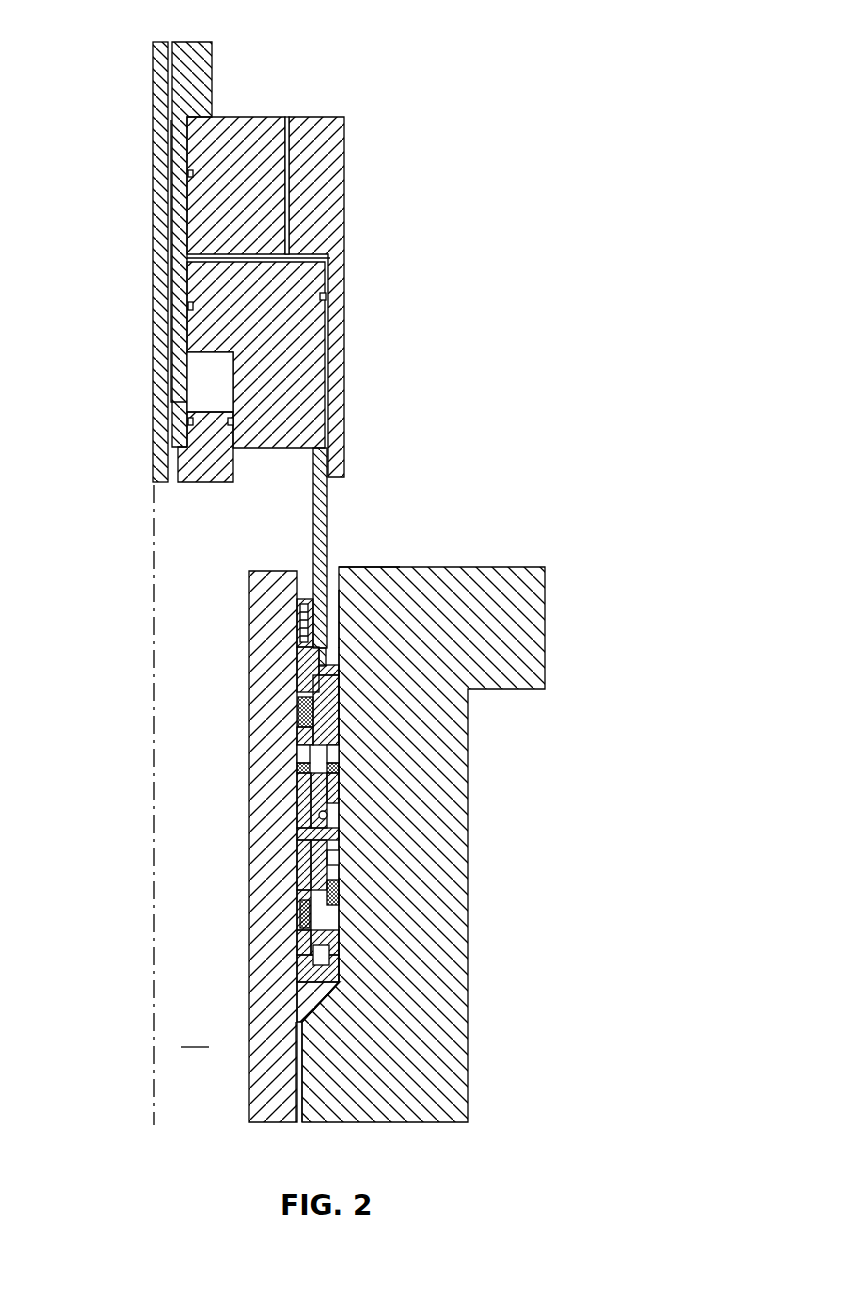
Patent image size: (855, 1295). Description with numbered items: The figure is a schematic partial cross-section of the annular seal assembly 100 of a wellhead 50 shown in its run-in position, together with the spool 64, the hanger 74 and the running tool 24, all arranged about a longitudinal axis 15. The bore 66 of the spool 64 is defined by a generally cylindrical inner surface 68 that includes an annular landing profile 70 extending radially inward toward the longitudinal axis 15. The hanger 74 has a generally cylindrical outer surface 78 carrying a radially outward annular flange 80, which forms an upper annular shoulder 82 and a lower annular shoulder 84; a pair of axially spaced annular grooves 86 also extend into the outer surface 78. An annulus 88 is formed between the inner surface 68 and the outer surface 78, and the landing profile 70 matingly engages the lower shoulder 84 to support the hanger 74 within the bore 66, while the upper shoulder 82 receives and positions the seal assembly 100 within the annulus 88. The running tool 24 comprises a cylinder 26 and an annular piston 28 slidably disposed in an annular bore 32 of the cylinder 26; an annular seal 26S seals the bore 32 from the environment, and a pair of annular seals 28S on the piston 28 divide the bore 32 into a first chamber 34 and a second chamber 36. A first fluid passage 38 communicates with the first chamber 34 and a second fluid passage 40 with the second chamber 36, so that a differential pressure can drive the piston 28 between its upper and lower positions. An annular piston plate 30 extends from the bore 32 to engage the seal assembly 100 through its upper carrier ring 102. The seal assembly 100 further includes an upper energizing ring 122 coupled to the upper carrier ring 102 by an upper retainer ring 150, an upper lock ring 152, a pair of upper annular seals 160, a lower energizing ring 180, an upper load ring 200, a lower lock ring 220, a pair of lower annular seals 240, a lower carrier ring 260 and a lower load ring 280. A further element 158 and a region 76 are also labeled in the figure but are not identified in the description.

The wellhead 50 is at (425, 81).
The running tool 24 is at (121, 168).
The second fluid passage 40 is at (172, 188).
The cylinder 26 is at (345, 158).
The first fluid passage 38 is at (287, 122).
The annular piston 28 is at (320, 355).
The first chamber 34 is at (330, 265).
The annular seals 28S is at (188, 306).
The annular bore 32 is at (205, 385).
The second chamber 36 is at (205, 420).
The annular seal 26S is at (235, 422).
The annular piston plate 30 is at (323, 490).
The longitudinal axis 15 is at (152, 540).
The hanger 74 is at (268, 1060).
The upper annular shoulder 82 is at (320, 990).
The spool 64 is at (468, 806).
The annulus 88 is at (345, 568).
The bore 66 is at (340, 606).
The inner surface 68 is at (340, 630).
The annular landing profile 70 is at (340, 1013).
The lower annular shoulder 84 is at (325, 1035).
The annular flange 80 is at (322, 997).
The annular seal assembly 100 is at (346, 689).
The outer surface 78 is at (300, 612).
The upper carrier ring 102 is at (300, 652).
The upper retainer ring 150 is at (342, 668).
The upper energizing ring 122 is at (345, 718).
The upper lock ring 152 is at (300, 706).
The recess 158 is at (300, 748).
The upper annular seals 160 is at (345, 772).
The annular grooves 86 is at (298, 785).
The upper load ring 200 is at (305, 832).
The lower energizing ring 180 is at (330, 815).
The lower lock ring 220 is at (300, 852).
The lower annular seals 240 is at (335, 900).
The lower load ring 280 is at (298, 956).
The lower carrier ring 260 is at (345, 968).
The chamber 76 is at (195, 1032).